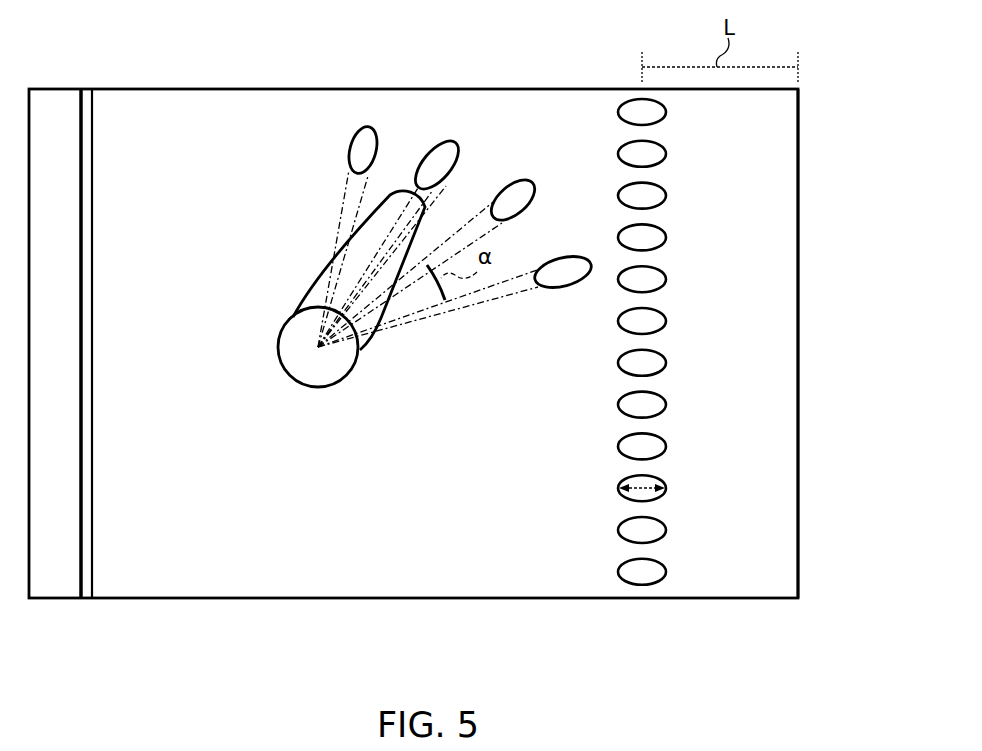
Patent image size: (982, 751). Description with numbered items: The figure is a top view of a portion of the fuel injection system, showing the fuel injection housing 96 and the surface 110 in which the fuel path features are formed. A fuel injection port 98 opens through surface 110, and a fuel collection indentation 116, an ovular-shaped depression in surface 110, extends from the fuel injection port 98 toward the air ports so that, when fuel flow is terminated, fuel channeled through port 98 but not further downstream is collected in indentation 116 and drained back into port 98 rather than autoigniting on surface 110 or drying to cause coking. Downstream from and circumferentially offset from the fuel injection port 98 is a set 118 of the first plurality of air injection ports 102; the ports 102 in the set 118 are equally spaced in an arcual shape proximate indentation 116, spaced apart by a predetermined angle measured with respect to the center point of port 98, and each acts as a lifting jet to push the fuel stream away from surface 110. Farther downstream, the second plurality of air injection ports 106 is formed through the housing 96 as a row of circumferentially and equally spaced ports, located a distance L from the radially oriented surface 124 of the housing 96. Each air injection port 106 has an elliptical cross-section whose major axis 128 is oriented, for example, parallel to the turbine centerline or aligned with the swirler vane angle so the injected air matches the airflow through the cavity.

The fuel injection housing 96 is at (498, 578).
The fuel injection port 98 is at (321, 388).
The first plurality of air injection ports 102 is at (322, 144).
The second plurality of air injection ports 106 is at (680, 609).
The surface 110 is at (465, 402).
The fuel collection indentation 116 is at (330, 263).
The set of air injection ports 118 is at (383, 103).
The radially oriented surface 124 is at (800, 217).
The major axis 128 is at (646, 483).